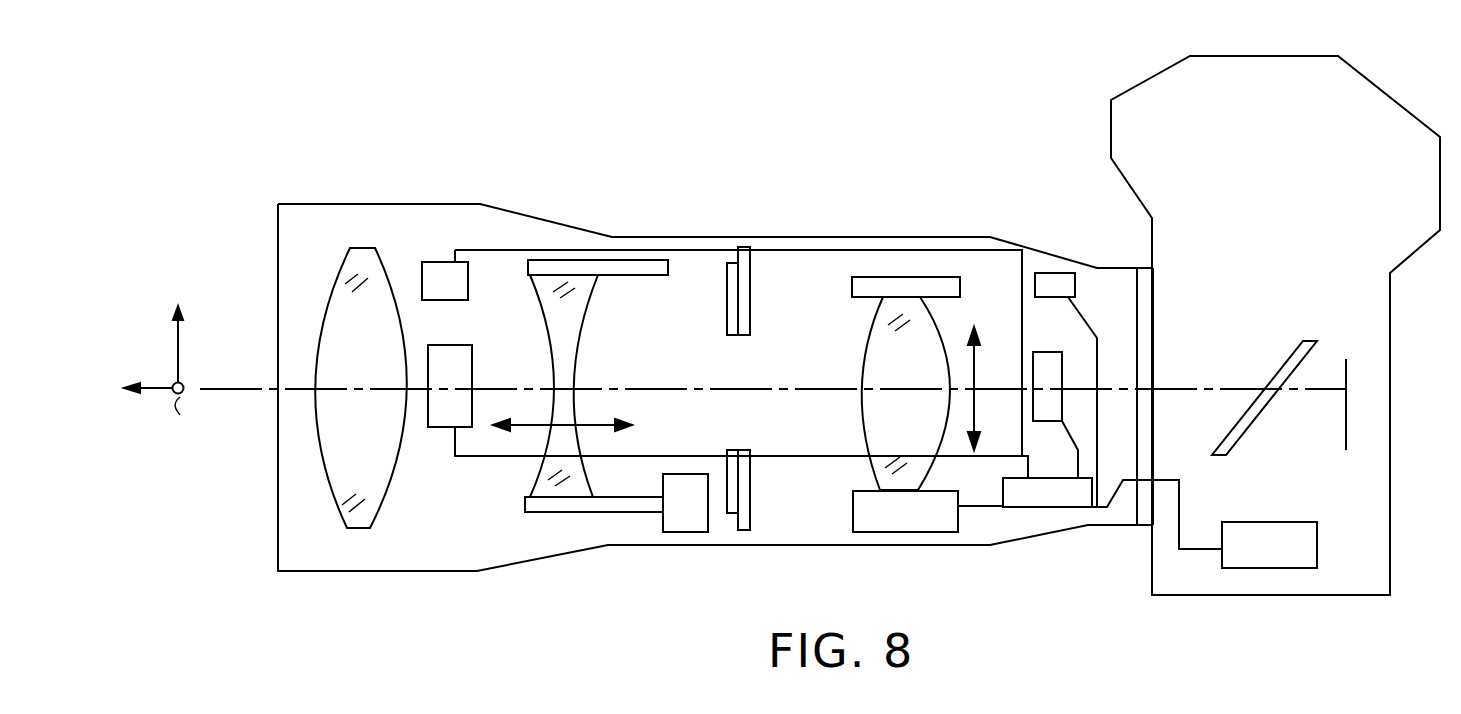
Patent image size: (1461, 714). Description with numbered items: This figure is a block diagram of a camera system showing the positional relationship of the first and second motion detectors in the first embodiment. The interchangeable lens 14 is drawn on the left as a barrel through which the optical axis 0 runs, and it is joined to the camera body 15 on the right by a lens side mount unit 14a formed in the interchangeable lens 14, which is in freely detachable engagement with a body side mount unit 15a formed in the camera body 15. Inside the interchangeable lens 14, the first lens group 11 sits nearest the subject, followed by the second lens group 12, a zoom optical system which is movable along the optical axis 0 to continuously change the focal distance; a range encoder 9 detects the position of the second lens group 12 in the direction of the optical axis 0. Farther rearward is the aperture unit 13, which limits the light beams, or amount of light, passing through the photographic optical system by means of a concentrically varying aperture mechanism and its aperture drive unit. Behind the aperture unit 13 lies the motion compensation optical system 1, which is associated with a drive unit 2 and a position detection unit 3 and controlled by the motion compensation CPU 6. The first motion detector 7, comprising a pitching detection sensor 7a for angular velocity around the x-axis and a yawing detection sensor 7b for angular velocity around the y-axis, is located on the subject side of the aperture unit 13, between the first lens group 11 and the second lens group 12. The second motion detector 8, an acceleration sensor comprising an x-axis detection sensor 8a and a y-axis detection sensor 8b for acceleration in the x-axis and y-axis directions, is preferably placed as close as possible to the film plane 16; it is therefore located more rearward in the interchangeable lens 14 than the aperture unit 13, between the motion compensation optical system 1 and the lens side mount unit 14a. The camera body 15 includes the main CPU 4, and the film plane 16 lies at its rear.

The optical axis 0 is at (248, 388).
The motion compensation optical system 1 is at (887, 476).
The drive unit 2 is at (937, 518).
The position detection unit 3 is at (923, 277).
The main CPU 4 is at (1318, 548).
The motion compensation CPU 6 is at (1033, 498).
The first motion detector 7 is at (353, 160).
The pitching detection sensor 7a is at (436, 262).
The yawing detection sensor 7b is at (437, 355).
The second motion detector 8 is at (993, 210).
The x-axis detection sensor 8a is at (1050, 287).
The y-axis detection sensor 8b is at (1052, 375).
The range encoder 9 is at (697, 522).
The first lens group 11 is at (387, 483).
The second lens group 12 is at (560, 480).
The aperture unit 13 is at (727, 265).
The interchangeable lens 14 is at (560, 222).
The lens side mount unit 14a is at (1150, 291).
The camera body 15 is at (1262, 56).
The body side mount unit 15a is at (1150, 505).
The film plane 16 is at (1365, 442).